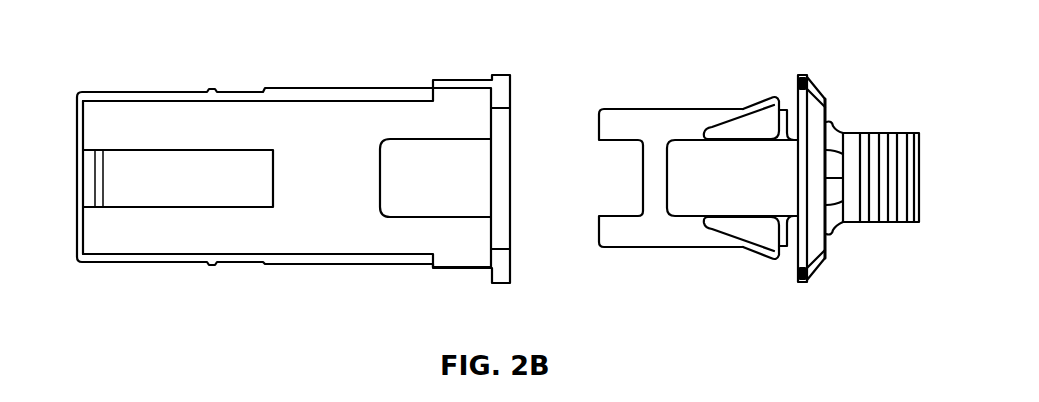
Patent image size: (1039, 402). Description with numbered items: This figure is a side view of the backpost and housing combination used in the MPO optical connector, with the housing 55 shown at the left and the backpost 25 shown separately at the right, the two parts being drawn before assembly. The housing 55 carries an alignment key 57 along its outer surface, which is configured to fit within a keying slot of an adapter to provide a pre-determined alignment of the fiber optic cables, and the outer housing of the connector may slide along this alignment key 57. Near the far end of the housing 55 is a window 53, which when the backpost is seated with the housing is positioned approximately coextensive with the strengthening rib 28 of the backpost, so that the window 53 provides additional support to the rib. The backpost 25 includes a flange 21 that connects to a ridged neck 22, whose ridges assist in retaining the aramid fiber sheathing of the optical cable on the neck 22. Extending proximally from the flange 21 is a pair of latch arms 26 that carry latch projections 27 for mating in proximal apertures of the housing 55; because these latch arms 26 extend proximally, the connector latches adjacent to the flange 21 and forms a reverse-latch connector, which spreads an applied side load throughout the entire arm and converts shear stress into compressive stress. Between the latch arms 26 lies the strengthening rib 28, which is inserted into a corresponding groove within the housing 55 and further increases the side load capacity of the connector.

The flange 21 is at (810, 113).
The ridged neck 22 is at (905, 187).
The backpost 25 is at (788, 160).
The latch arms 26 is at (670, 135).
The latch projections 27 is at (765, 97).
The strengthening ribs 28 is at (743, 190).
The windows 53 is at (447, 190).
The housing 55 is at (148, 107).
The alignment key 57 is at (196, 193).